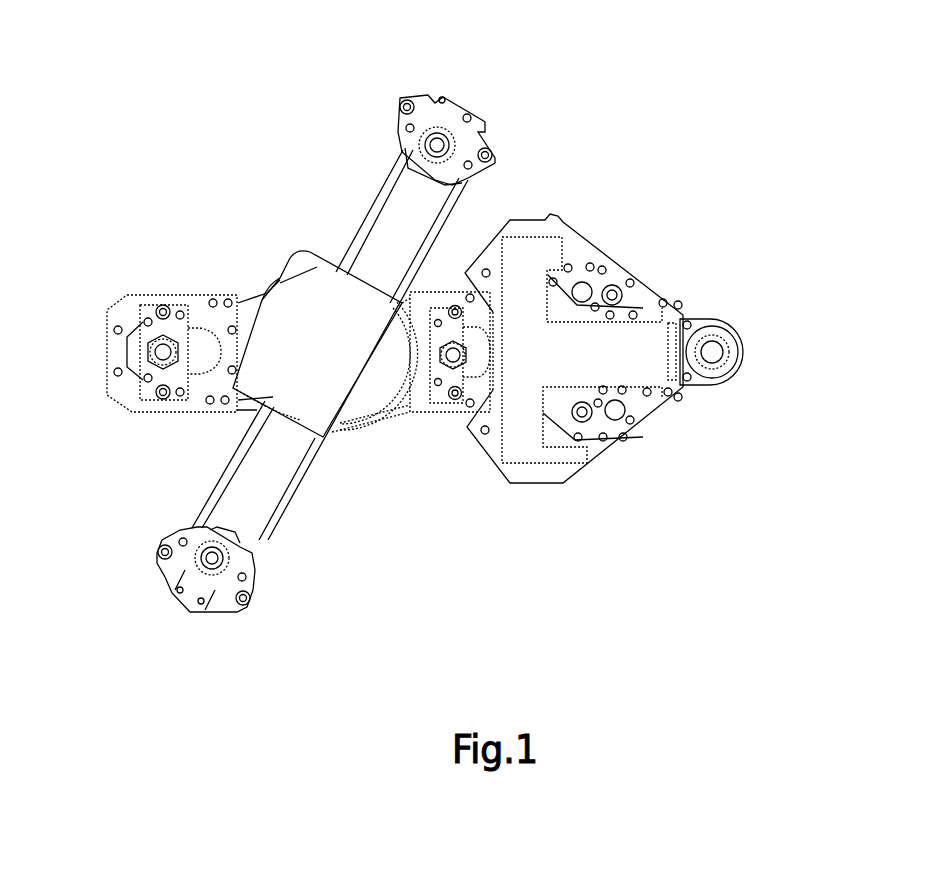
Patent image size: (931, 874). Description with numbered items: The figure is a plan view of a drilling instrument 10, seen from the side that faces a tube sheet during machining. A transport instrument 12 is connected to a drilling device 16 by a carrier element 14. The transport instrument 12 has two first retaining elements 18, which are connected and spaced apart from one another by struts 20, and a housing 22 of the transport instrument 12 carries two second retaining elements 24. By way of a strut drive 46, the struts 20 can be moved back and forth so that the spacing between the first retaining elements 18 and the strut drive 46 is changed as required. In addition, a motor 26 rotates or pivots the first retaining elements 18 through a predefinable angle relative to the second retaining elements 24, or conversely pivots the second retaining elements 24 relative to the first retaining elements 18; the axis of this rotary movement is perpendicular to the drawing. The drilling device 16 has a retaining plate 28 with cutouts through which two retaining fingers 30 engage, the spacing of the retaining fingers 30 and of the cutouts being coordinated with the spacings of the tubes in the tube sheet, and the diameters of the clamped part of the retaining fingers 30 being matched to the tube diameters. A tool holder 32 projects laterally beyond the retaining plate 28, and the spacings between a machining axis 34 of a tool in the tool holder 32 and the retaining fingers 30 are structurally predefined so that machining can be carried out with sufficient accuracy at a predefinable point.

The drilling instrument 10 is at (530, 578).
The transport instrument 12 is at (300, 239).
The carrier element 14 is at (433, 285).
The drilling device 16 is at (612, 231).
The first retaining elements 18 is at (432, 137).
The struts 20 is at (374, 198).
The housing 22 is at (123, 310).
The second retaining elements 24 is at (155, 358).
The motor 26 is at (370, 390).
The retaining plate 28 is at (568, 243).
The retaining fingers 30 is at (624, 295).
The tool holder 32 is at (745, 330).
The machining axis 34 is at (735, 352).
The strut drive 46 is at (308, 322).